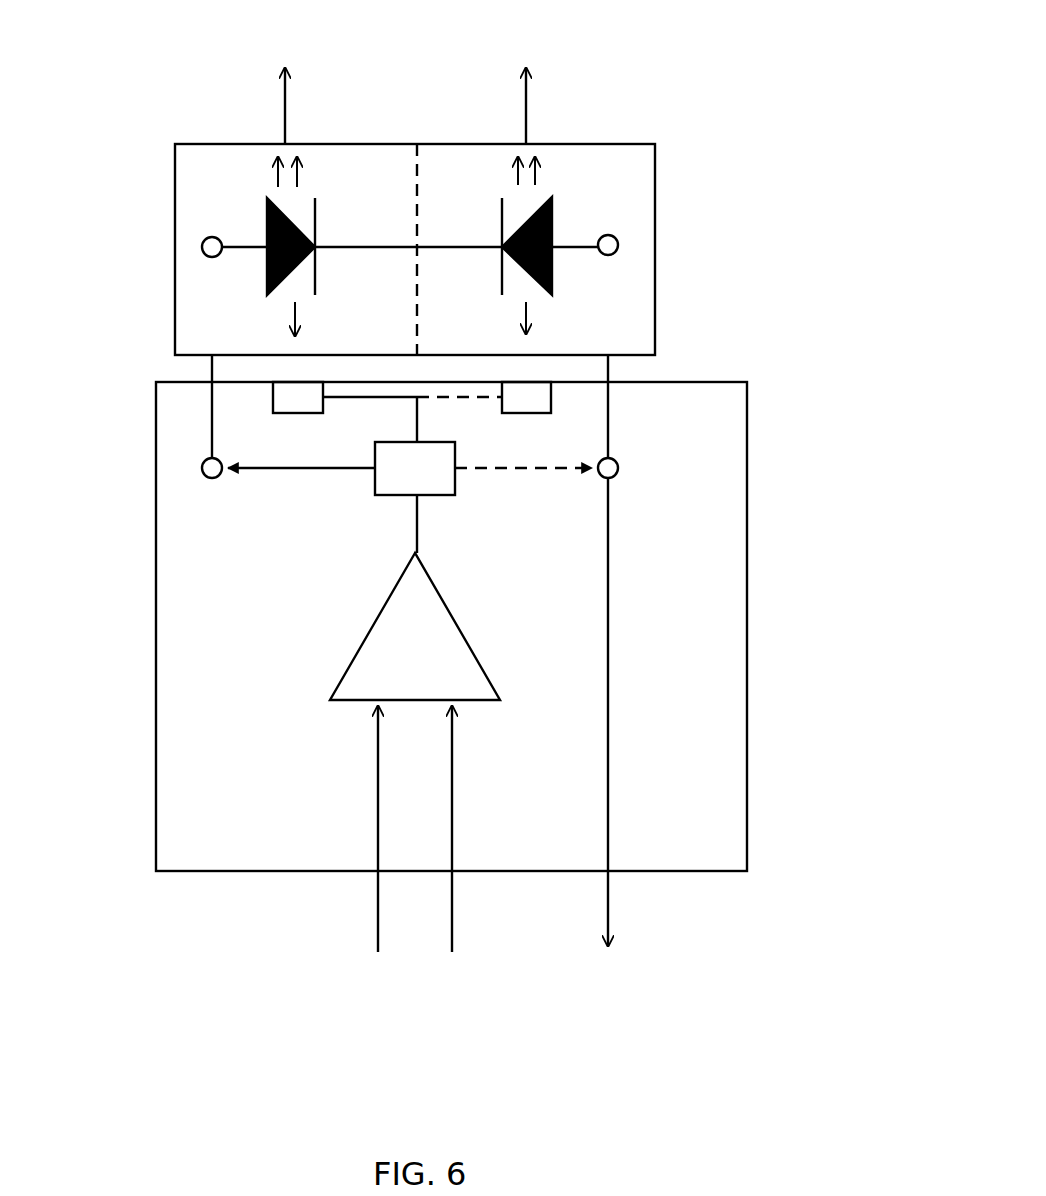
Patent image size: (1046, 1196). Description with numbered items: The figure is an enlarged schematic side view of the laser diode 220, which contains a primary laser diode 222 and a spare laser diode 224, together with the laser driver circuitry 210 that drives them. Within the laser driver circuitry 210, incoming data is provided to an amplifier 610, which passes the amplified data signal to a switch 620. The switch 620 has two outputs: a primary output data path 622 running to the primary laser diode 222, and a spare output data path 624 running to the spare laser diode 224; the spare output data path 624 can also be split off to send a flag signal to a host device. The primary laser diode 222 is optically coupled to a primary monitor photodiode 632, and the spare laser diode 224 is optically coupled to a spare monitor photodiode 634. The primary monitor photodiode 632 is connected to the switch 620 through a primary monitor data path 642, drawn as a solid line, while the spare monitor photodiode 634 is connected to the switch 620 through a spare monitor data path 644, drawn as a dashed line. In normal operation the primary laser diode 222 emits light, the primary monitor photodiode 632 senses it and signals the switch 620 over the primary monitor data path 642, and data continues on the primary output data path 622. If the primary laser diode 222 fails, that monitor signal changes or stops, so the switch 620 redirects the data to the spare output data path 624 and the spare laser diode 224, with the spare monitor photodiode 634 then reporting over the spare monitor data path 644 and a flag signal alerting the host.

The laser driver circuitry 210 is at (452, 668).
The laser diode 220 is at (424, 178).
The primary laser diode 222 is at (175, 248).
The spare laser diode 224 is at (655, 233).
The amplifier 610 is at (330, 700).
The switch 620 is at (375, 495).
The primary output data path 622 is at (303, 470).
The spare output data path 624 is at (528, 468).
The primary monitor photodiode 632 is at (273, 400).
The spare monitor photodiode 634 is at (551, 397).
The primary monitor data path 642 is at (368, 398).
The spare monitor data path 644 is at (473, 397).